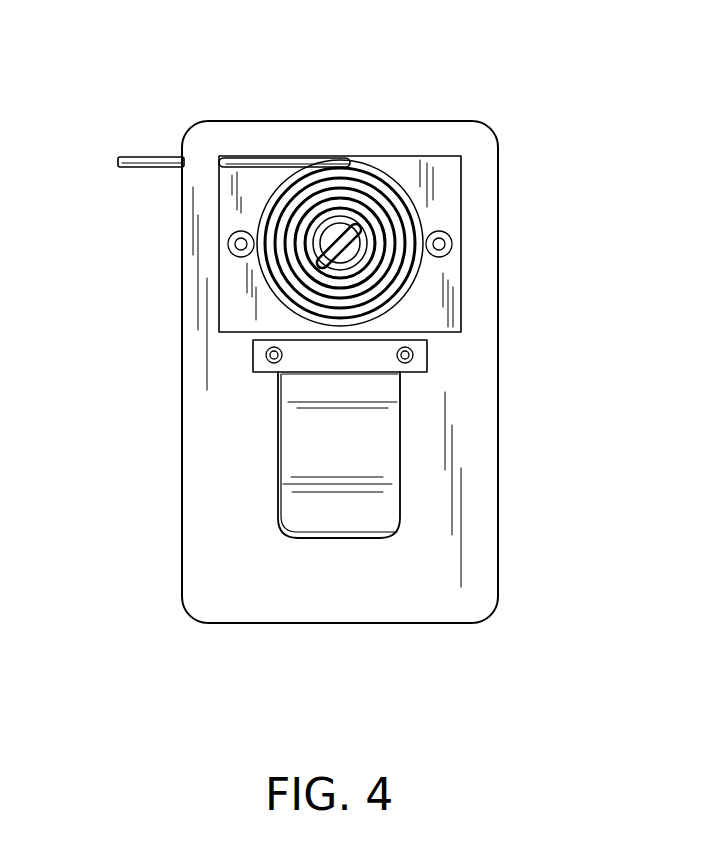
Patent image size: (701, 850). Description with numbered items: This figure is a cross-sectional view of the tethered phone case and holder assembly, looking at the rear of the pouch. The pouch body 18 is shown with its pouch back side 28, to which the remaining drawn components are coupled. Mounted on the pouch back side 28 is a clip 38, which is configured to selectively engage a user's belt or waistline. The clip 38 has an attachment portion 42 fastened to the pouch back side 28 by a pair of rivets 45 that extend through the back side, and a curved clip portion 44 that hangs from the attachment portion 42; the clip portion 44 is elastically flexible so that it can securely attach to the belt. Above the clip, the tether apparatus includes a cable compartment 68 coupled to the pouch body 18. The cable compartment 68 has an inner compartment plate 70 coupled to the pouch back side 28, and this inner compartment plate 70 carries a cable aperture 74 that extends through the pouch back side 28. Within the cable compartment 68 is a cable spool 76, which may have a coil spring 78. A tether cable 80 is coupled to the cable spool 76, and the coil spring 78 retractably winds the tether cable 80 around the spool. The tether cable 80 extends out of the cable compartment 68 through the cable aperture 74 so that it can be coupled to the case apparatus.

The pouch body 18 is at (498, 582).
The pouch back side 28 is at (402, 585).
The clip 38 is at (400, 494).
The attachment portion 42 is at (365, 353).
The curved clip portion 44 is at (369, 454).
The pair of rivets 45 is at (274, 355).
The cable compartment 68 is at (462, 197).
The inner compartment plate 70 is at (433, 173).
The cable aperture 74 is at (222, 160).
The cable spool 76 is at (327, 228).
The coil spring 78 is at (351, 223).
The tether cable 80 is at (145, 160).